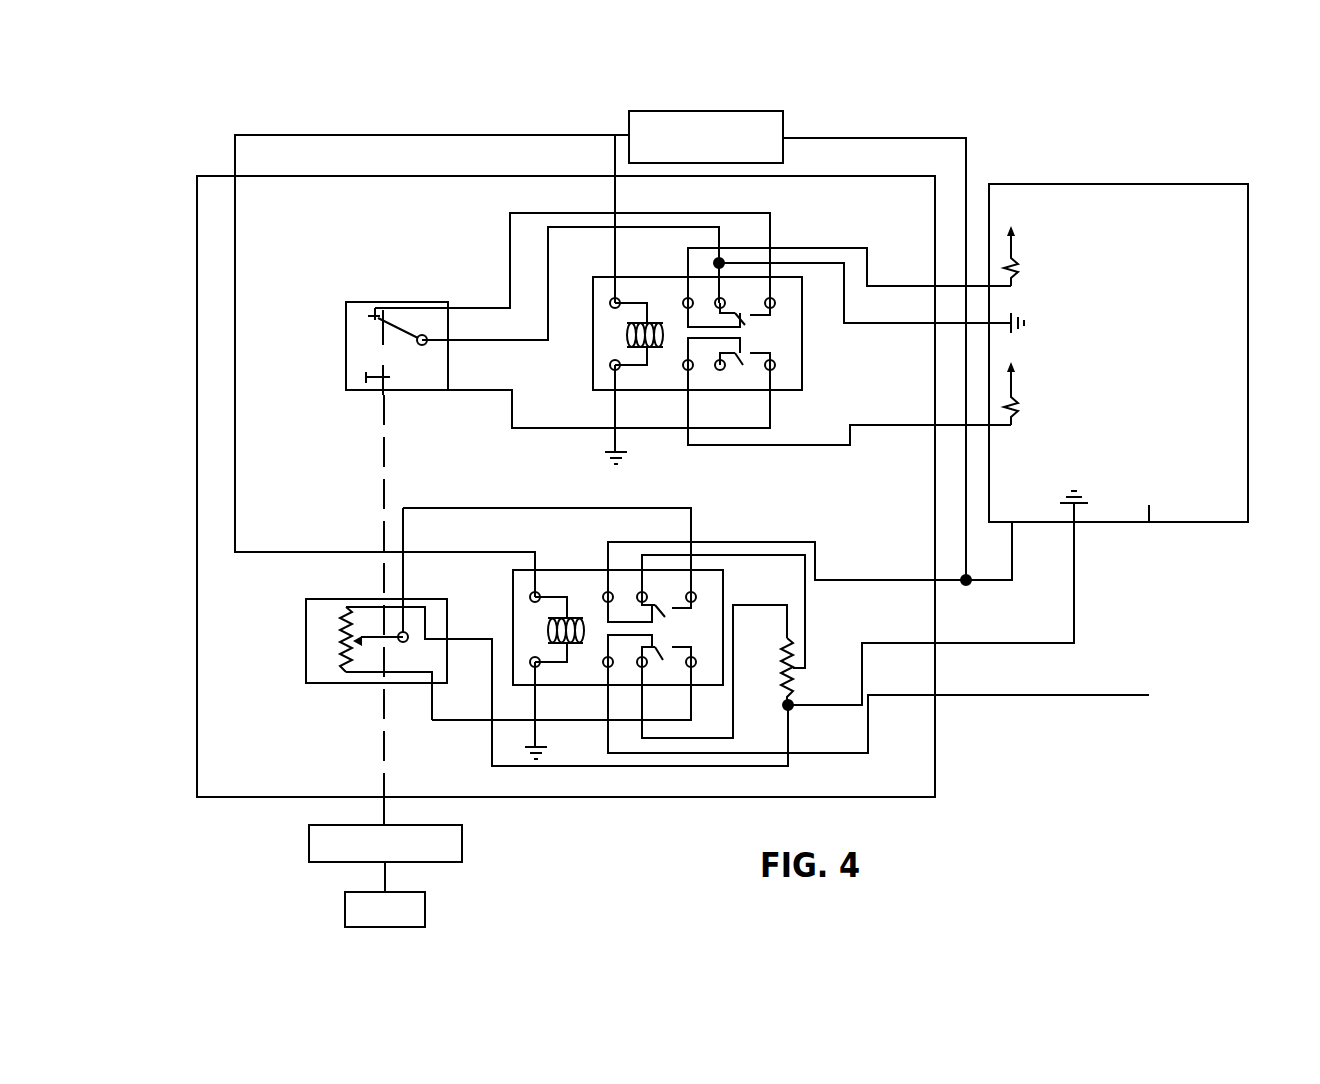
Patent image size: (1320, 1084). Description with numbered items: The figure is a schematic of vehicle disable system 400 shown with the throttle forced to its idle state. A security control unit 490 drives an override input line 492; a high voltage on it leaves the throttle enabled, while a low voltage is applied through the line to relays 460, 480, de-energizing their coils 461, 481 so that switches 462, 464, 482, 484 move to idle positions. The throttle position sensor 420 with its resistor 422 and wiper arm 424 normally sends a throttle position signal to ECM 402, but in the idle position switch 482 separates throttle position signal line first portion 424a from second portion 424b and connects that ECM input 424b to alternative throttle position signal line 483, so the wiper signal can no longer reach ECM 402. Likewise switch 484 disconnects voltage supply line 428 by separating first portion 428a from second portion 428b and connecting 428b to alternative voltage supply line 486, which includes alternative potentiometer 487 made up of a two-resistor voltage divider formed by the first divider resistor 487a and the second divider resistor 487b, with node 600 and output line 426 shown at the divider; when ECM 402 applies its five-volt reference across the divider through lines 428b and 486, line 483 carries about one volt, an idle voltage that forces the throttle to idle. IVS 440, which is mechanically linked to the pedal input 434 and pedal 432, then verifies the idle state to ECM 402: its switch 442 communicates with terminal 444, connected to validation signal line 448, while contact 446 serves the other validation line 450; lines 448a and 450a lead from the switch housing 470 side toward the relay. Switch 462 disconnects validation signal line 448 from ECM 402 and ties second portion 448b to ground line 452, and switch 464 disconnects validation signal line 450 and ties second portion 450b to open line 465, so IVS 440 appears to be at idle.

The vehicle disable system 400 is at (966, 102).
The ECM 402 is at (1127, 184).
The pedal position sensor 420 is at (306, 633).
The potentiometer resistor 422 is at (343, 621).
The throttle position signal line 424 is at (413, 559).
The throttle position signal line first portion 424a is at (535, 508).
The throttle position signal line second portion 424b is at (616, 541).
The sensor output line 426 is at (413, 604).
The voltage supply line 428 is at (412, 674).
The voltage supply line first portion 428a is at (467, 722).
The voltage supply line second portion 428b is at (642, 754).
The pedal 432 is at (425, 898).
The pedal input 434 is at (491, 827).
The IVS 440 is at (346, 313).
The switch 442 is at (383, 350).
The terminal 444 is at (368, 322).
The switch contact 446 is at (364, 374).
The validation signal line 448 is at (411, 306).
The switch line 448a is at (474, 298).
The validation signal line second portion 448b is at (848, 248).
The validation signal line 450 is at (490, 392).
The switch line branch 450a is at (540, 428).
The validation signal line second portion 450b is at (790, 445).
The ground line 452 is at (515, 342).
The relay 460 is at (677, 277).
The coil 461 is at (627, 335).
The switch 462 is at (737, 316).
The switch 464 is at (727, 364).
The open line 465 is at (731, 375).
The security module housing 470 is at (197, 713).
The relay 480 is at (553, 569).
The coil 481 is at (547, 632).
The switch 482 is at (646, 606).
The alternative throttle position signal line 483 is at (707, 552).
The switch 484 is at (645, 651).
The alternative voltage supply line 486 is at (702, 740).
The alternative potentiometer 487 is at (817, 658).
The 2.4K resistor 487a is at (797, 641).
The 600K resistor 487b is at (796, 708).
The security control unit 490 is at (783, 127).
The override input line 492 is at (600, 126).
The junction node 600 is at (767, 695).